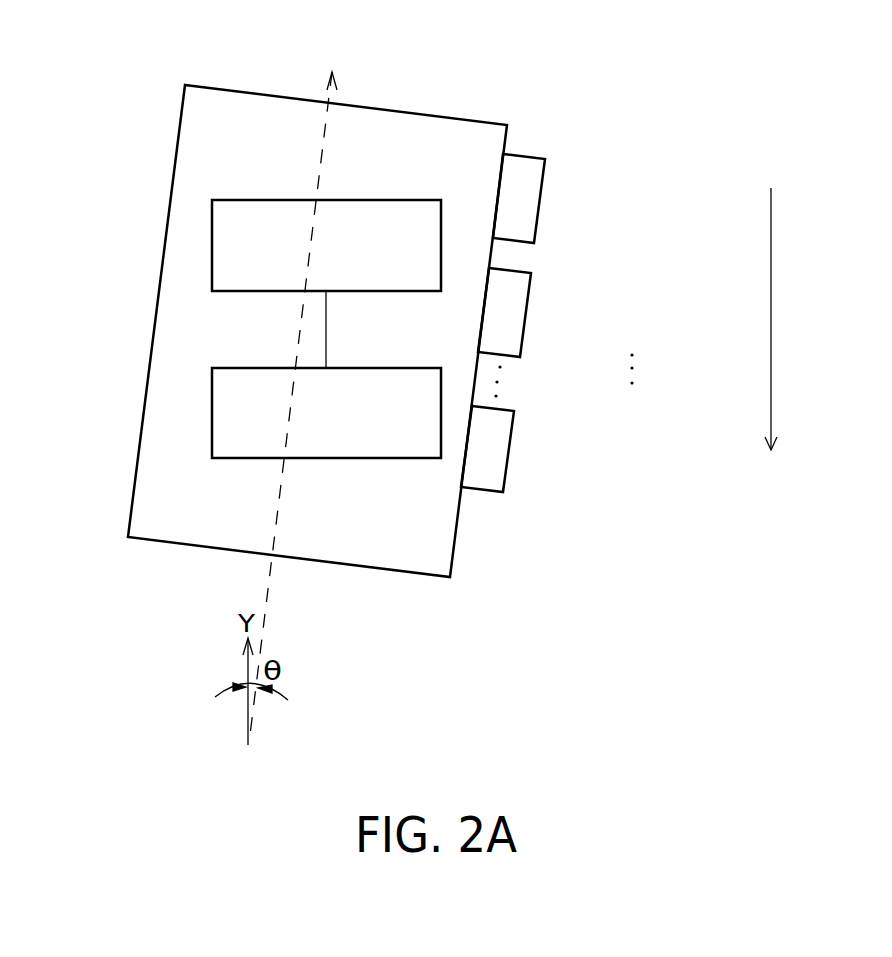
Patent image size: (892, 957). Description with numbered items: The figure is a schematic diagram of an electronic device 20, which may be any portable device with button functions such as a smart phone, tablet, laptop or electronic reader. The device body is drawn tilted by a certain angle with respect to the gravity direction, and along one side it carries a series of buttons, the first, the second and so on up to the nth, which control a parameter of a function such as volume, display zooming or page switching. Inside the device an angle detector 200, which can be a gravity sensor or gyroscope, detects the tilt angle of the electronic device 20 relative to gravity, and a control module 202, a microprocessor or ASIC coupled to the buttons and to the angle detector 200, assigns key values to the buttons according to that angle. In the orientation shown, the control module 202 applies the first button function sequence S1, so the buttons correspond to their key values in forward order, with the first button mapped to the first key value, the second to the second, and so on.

The electronic device 20 is at (428, 113).
The angle detector 200 is at (212, 242).
The control module 202 is at (212, 408).
The first button function sequence S1 is at (782, 319).